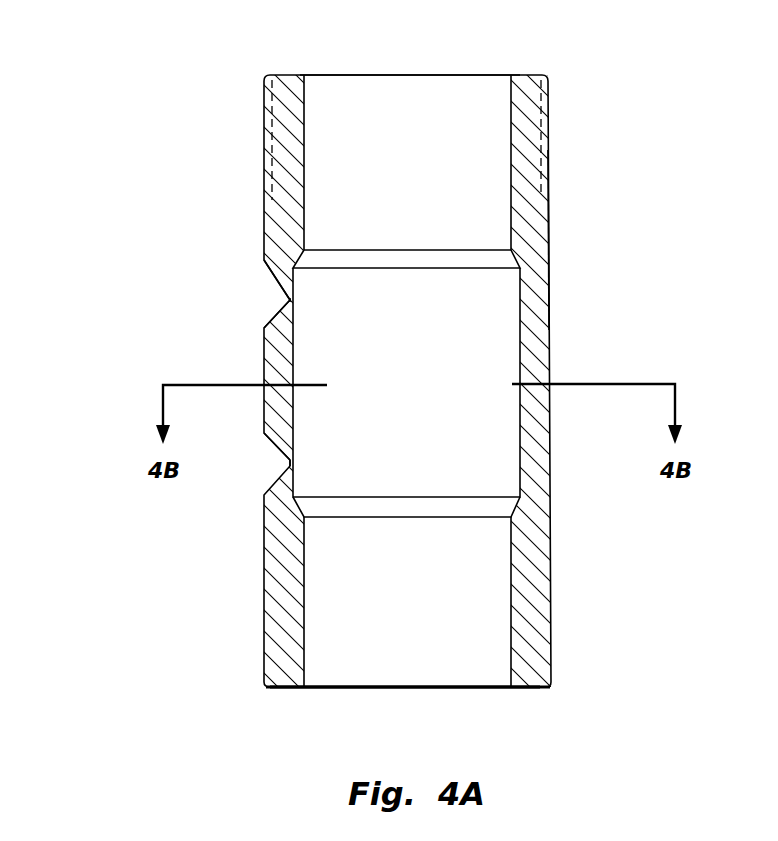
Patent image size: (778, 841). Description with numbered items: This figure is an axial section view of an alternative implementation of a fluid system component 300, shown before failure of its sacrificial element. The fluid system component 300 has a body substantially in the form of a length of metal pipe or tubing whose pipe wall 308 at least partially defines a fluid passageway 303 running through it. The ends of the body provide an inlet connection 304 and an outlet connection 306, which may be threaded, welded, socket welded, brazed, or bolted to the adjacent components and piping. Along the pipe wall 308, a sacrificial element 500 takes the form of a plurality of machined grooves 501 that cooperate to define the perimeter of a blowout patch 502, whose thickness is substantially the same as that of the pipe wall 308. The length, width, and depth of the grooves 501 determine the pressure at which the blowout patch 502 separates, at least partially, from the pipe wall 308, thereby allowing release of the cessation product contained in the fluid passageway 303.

The fluid system component 300 is at (183, 130).
The fluid passageway 303 is at (487, 333).
The inlet connection 304 is at (283, 689).
The outlet connection 306 is at (521, 74).
The pipe wall 308 is at (532, 238).
The sacrificial element 500 is at (260, 316).
The machined grooves 501 is at (284, 305).
The blowout patch 502 is at (262, 426).